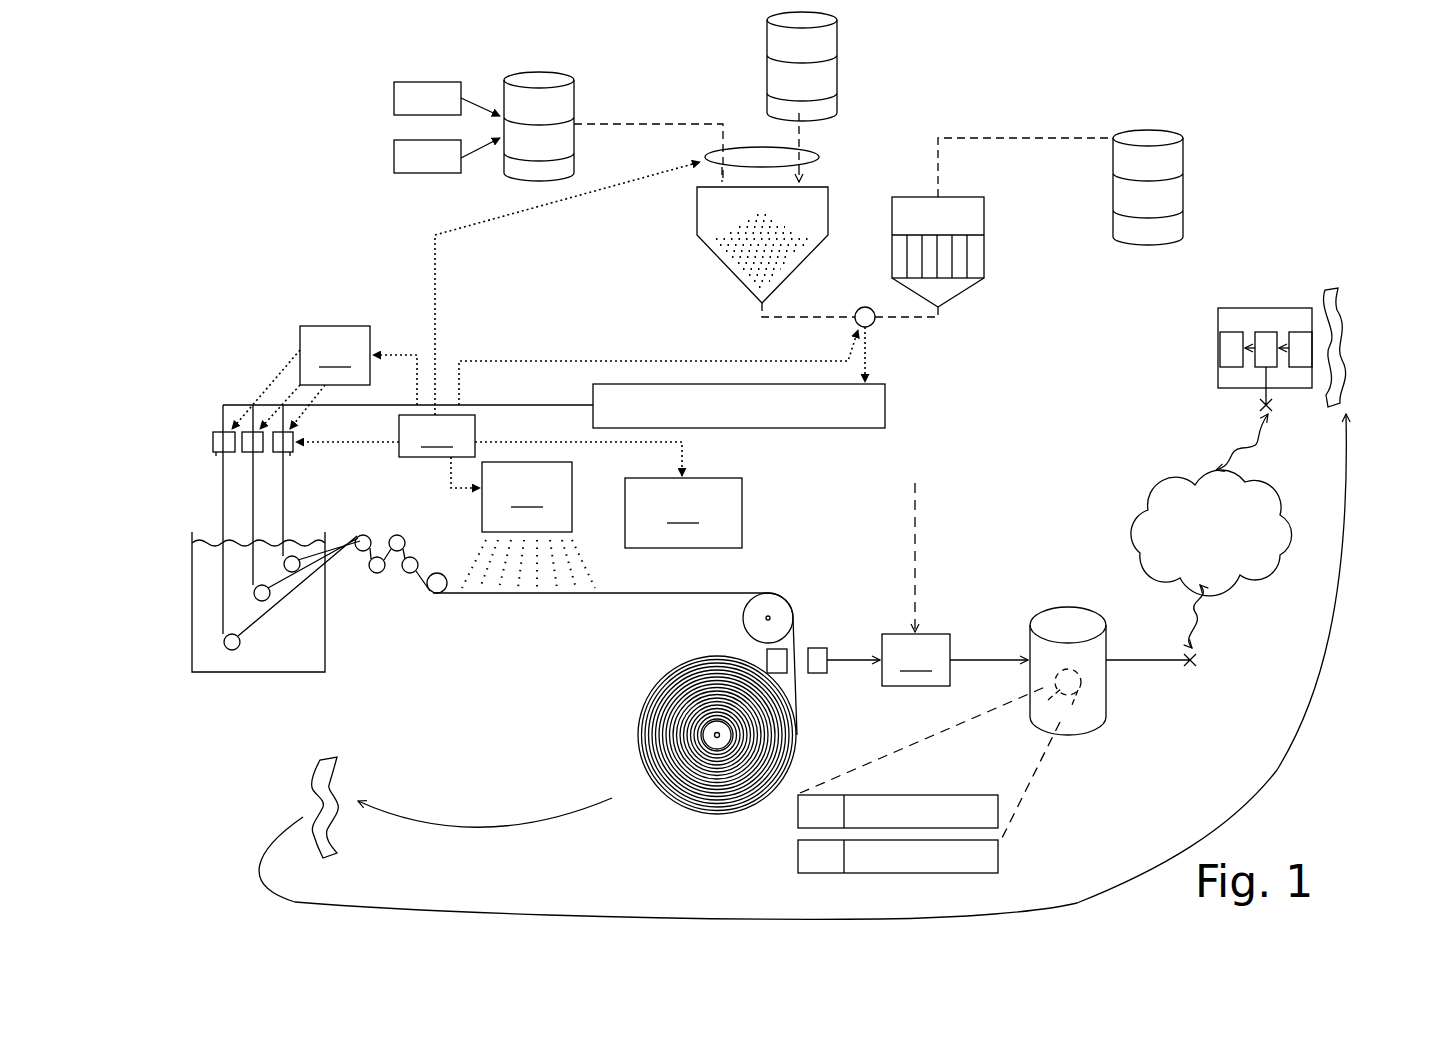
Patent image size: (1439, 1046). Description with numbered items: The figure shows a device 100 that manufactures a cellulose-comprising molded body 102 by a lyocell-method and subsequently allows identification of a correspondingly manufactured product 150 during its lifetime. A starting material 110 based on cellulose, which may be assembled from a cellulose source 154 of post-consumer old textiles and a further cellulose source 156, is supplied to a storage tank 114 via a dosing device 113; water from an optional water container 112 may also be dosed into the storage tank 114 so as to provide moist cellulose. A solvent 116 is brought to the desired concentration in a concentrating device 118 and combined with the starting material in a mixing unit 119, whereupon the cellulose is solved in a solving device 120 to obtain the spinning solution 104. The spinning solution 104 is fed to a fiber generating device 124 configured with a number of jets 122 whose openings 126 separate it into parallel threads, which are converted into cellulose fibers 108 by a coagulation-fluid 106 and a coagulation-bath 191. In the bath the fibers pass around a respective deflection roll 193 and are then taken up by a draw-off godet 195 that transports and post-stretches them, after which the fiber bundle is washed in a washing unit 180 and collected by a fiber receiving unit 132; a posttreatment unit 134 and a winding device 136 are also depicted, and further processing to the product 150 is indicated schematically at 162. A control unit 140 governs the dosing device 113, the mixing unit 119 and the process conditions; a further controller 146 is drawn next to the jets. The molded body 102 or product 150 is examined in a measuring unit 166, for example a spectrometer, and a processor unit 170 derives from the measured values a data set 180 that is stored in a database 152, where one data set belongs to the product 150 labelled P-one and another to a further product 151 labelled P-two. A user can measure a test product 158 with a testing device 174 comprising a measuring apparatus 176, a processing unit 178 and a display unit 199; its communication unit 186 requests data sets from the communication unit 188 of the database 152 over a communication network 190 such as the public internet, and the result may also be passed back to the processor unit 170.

The device 100 is at (292, 128).
The molded body 102 is at (650, 722).
The spinning solution 104 is at (488, 406).
The coagulation-fluid 106 is at (205, 613).
The cellulose fibers 108 is at (735, 593).
The starting material 110 is at (545, 80).
The water container 112 is at (840, 35).
The dosing device 113 is at (755, 150).
The storage tank 114 is at (830, 185).
The solvent 116 is at (1150, 140).
The concentrating device 118 is at (985, 215).
The mixing unit 119 is at (875, 320).
The solving device 120 is at (886, 410).
The spinning beams or jets 122 is at (297, 430).
The fiber generating device 124 is at (178, 445).
The openings 126 is at (216, 454).
The fiber receiving unit 132 is at (340, 650).
The posttreatment unit 134 is at (683, 513).
The winding device 136 is at (648, 768).
The control unit 140 is at (437, 436).
The controller 146 is at (335, 355).
The product 150 is at (298, 772).
The further product 151 is at (797, 862).
The database 152 is at (1070, 620).
The cellulose source 154 is at (447, 155).
The further cellulose source 156 is at (447, 99).
The test product 158 is at (1345, 297).
The further processing 162 is at (420, 815).
The measuring unit 166 is at (775, 658).
The processor unit 170 is at (955, 660).
The testing device 174 is at (1240, 305).
The measuring apparatus 176 is at (1300, 335).
The processing unit 178 is at (1262, 335).
The data set 180 is at (1000, 810).
The communication unit 186 is at (1258, 402).
The communication unit 188 is at (1190, 668).
The communication network 190 is at (1211, 533).
The coagulation-bath 191 is at (188, 572).
The deflection roll 193 is at (300, 570).
The draw-off godet 195 is at (408, 530).
The display unit 199 is at (1225, 348).